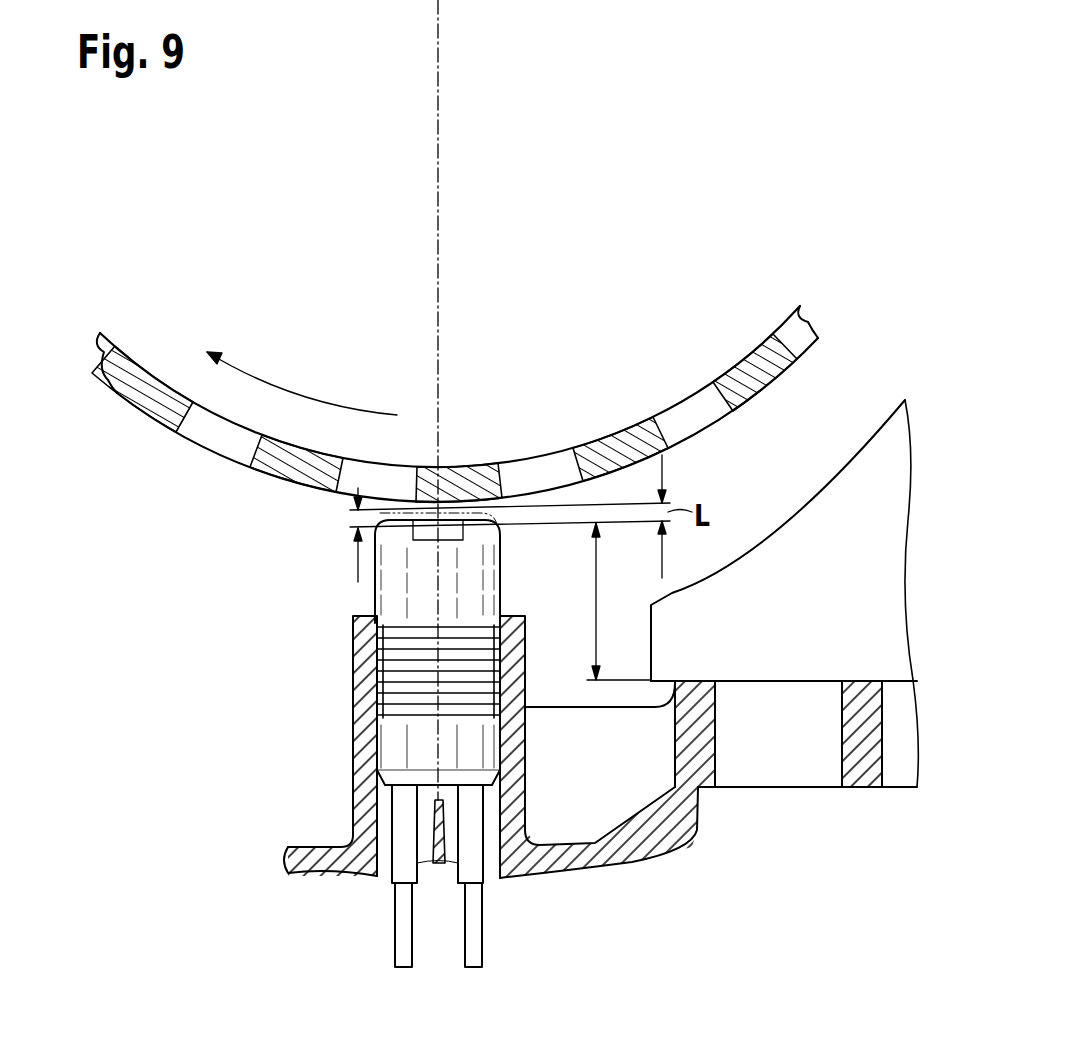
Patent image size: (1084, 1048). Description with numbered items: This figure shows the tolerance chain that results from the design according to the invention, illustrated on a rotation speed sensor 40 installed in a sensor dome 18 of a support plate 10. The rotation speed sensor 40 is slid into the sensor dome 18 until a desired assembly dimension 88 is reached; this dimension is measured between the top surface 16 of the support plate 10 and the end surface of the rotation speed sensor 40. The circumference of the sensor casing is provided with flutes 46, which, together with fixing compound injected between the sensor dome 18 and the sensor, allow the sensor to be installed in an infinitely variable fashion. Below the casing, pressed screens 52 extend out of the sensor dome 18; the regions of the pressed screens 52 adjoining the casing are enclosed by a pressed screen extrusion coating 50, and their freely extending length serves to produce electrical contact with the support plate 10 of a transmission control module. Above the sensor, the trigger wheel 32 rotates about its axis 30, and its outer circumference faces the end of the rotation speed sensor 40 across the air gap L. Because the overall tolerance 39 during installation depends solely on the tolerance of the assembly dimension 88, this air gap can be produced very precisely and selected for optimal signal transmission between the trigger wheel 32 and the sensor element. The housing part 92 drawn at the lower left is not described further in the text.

The support plate 10 is at (693, 737).
The top surface 16 is at (700, 679).
The sensor dome 18 is at (368, 662).
The axis of rotation 30 is at (440, 92).
The trigger wheel 32 is at (613, 450).
The overall tolerance 39 is at (355, 519).
The rotation speed sensor 40 is at (393, 600).
The flutes 46 is at (430, 703).
The pressed screen extrusion coating 50 is at (403, 872).
The pressed screens 52 is at (476, 935).
The assembly dimension 88 is at (596, 598).
The base plate 92 is at (292, 872).